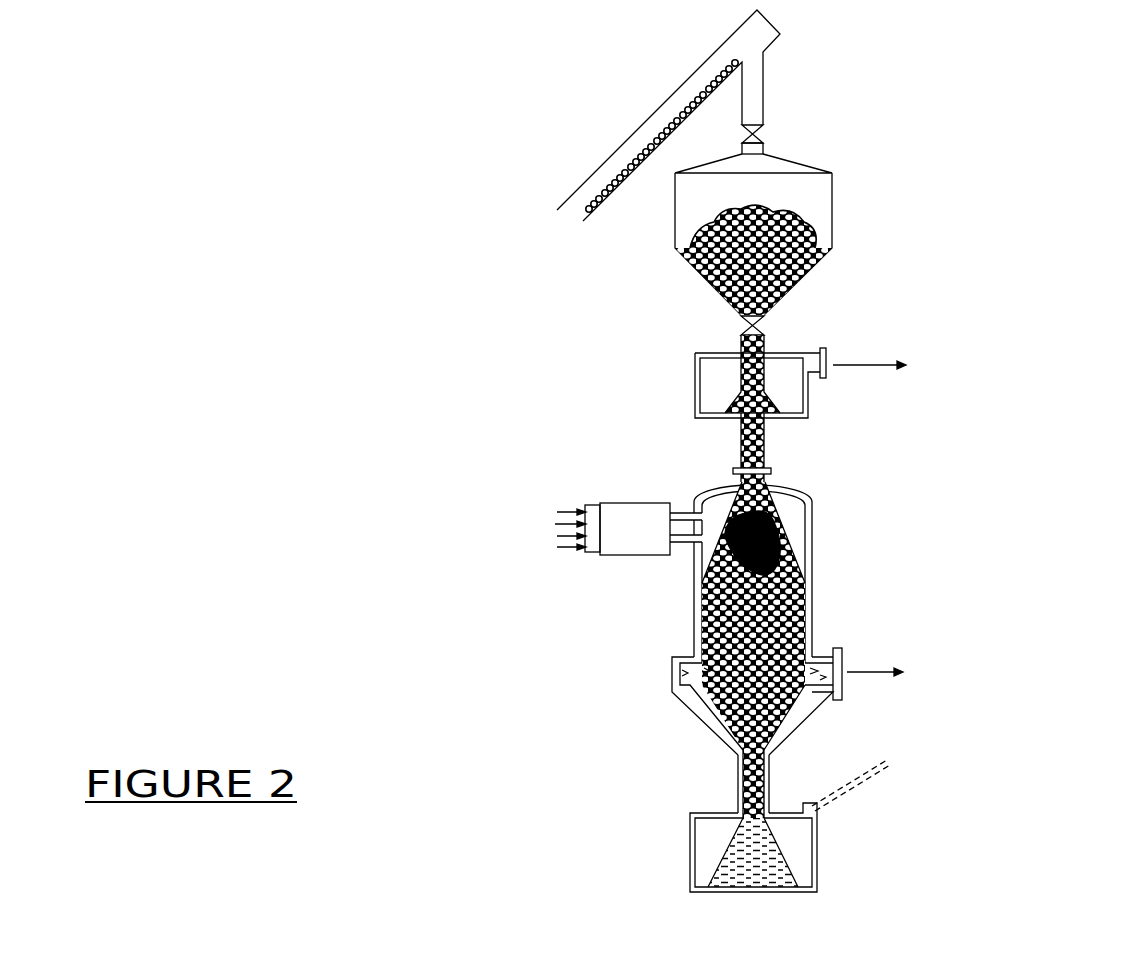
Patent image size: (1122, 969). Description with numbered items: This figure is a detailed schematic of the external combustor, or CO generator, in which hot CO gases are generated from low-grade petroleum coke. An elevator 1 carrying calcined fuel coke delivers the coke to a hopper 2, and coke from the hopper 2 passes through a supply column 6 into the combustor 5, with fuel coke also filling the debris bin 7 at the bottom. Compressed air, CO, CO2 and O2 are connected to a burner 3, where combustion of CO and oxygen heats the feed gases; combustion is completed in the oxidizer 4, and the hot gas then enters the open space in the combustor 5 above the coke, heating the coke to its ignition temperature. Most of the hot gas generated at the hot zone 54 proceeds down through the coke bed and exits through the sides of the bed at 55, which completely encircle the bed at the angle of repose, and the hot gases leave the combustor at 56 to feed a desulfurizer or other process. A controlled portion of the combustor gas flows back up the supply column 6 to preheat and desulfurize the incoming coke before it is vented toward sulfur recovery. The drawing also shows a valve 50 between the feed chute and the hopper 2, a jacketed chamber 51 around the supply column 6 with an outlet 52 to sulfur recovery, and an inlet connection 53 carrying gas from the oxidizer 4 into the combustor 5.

The elevator 1 is at (572, 186).
The hopper 2 is at (672, 235).
The hopper inlet valve 50 is at (765, 133).
The sulfur separation chamber 51 is at (700, 380).
The outlet to sulfur recovery 52 is at (827, 348).
The supply column 6 is at (765, 448).
The gas inlet pipe 53 is at (687, 510).
The hot zone 54 is at (783, 535).
The combustor 5 is at (813, 570).
The burner 3 is at (588, 553).
The oxidizer 4 is at (627, 555).
The sides of the bed 55 is at (823, 663).
The hot gas exit 56 is at (847, 687).
The debris bin 7 is at (690, 843).